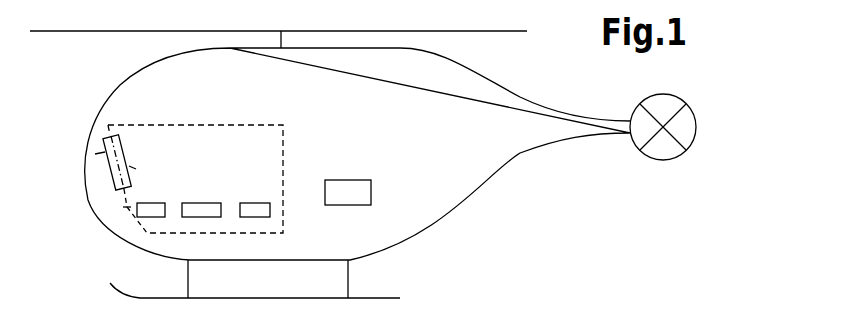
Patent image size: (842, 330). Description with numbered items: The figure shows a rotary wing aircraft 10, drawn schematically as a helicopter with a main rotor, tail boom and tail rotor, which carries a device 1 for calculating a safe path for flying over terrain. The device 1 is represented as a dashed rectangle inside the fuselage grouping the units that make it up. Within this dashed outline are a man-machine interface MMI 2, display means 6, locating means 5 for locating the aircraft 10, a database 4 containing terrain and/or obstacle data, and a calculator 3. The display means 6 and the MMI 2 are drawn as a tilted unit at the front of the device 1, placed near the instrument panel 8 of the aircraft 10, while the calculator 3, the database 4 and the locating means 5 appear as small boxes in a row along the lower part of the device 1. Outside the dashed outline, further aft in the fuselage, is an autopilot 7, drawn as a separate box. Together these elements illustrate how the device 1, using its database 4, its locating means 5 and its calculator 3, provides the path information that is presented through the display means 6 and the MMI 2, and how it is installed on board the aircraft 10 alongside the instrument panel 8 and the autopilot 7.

The device 1 is at (283, 137).
The man-machine interface 2 is at (135, 167).
The calculator 3 is at (135, 209).
The database 4 is at (203, 203).
The locating means 5 is at (257, 203).
The display means 6 is at (123, 145).
The autopilot 7 is at (355, 180).
The instrument panel 8 is at (103, 152).
The rotary wing aircraft 10 is at (363, 164).